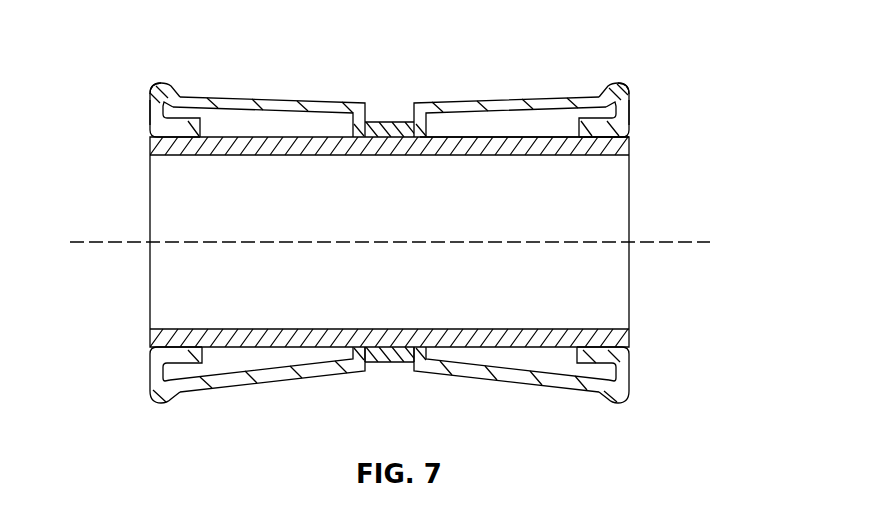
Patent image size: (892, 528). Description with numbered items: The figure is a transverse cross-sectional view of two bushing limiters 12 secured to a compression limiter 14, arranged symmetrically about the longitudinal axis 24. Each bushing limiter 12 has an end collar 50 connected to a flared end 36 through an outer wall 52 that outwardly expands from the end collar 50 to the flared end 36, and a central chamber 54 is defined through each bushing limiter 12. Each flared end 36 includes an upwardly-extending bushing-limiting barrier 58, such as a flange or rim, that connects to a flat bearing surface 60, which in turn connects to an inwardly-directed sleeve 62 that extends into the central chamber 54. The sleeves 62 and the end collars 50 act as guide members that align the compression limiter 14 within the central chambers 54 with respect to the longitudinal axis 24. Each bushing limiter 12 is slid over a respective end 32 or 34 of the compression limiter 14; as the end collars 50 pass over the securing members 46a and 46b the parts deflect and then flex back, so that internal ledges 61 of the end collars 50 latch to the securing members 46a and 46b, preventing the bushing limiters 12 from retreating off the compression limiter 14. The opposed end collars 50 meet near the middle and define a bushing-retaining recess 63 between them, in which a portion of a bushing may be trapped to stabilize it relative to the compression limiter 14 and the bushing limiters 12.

The bushing limiter 12 is at (161, 410).
The compression limiter 14 is at (610, 153).
The longitudinal axis 24 is at (90, 245).
The end of the compression limiter 32 is at (150, 334).
The end of the compression limiter 34 is at (629, 147).
The flared end 36 is at (158, 86).
The securing member 46a is at (338, 353).
The securing member 46b is at (447, 353).
The end collar 50 is at (377, 120).
The outer wall 52 is at (268, 98).
The central chamber 54 is at (278, 125).
The bushing-limiting barrier 58 is at (177, 95).
The bearing surface 60 is at (150, 107).
The internal ledge 61 is at (358, 353).
The sleeve 62 is at (150, 155).
The bushing-retaining recess 63 is at (390, 363).